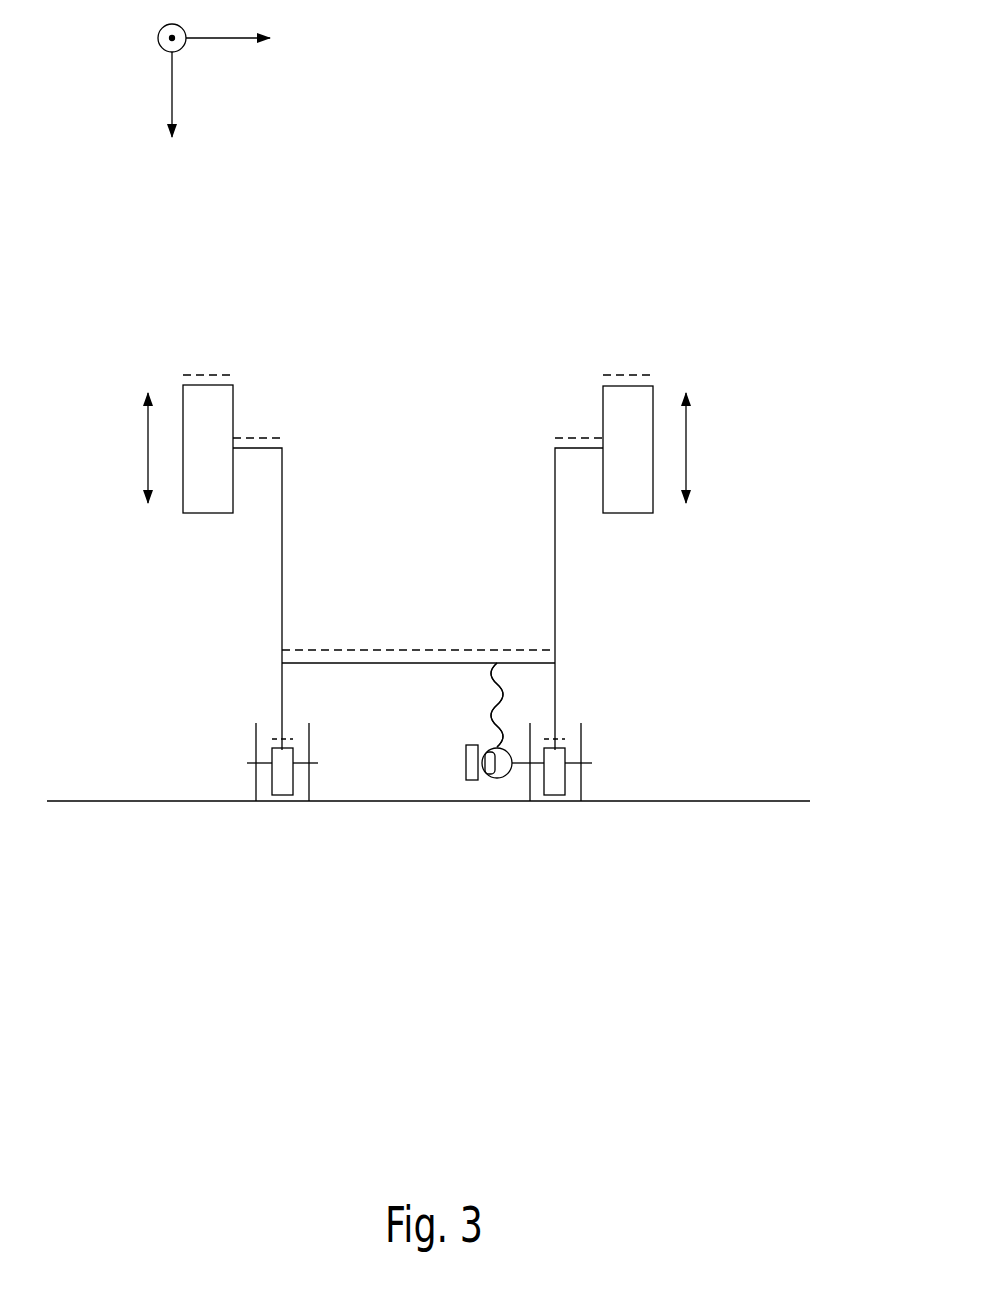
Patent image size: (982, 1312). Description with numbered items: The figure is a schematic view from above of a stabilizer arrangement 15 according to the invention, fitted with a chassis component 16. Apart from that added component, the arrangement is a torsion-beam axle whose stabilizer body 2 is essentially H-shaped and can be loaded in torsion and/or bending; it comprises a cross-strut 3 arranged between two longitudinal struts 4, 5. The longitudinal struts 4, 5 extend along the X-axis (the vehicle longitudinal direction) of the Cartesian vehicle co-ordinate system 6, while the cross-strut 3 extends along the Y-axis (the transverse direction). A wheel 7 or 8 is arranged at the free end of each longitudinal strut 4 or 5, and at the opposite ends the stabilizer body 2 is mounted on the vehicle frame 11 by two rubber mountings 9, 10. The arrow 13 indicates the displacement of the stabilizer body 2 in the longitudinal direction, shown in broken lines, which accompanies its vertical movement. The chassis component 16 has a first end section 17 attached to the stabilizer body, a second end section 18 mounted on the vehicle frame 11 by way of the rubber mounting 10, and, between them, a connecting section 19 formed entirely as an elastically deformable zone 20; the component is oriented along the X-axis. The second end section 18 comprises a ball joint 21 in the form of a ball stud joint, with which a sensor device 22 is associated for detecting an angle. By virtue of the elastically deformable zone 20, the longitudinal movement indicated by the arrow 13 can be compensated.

The stabilizer body 2 is at (260, 663).
The cross-strut 3 is at (357, 662).
The longitudinal strut 4 is at (282, 555).
The longitudinal strut 5 is at (555, 555).
The vehicle co-ordinate system 6 is at (130, 72).
The wheel 7 is at (213, 413).
The wheel 8 is at (622, 413).
The rubber mounting 9 is at (282, 785).
The rubber mounting 10 is at (560, 785).
The vehicle frame 11 is at (100, 802).
The arrow 13 is at (148, 440).
The stabilizer arrangement 15 is at (770, 553).
The chassis component 16 is at (442, 738).
The first end section 17 is at (504, 668).
The second end section 18 is at (490, 790).
The connecting section 19 is at (474, 703).
The elastically deformable zone 20 is at (504, 707).
The ball joint 21 is at (516, 782).
The sensor device 22 is at (462, 782).